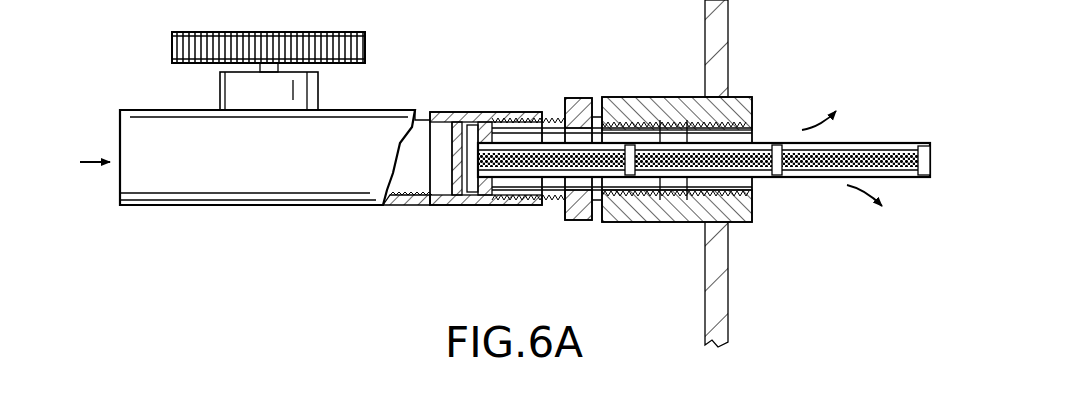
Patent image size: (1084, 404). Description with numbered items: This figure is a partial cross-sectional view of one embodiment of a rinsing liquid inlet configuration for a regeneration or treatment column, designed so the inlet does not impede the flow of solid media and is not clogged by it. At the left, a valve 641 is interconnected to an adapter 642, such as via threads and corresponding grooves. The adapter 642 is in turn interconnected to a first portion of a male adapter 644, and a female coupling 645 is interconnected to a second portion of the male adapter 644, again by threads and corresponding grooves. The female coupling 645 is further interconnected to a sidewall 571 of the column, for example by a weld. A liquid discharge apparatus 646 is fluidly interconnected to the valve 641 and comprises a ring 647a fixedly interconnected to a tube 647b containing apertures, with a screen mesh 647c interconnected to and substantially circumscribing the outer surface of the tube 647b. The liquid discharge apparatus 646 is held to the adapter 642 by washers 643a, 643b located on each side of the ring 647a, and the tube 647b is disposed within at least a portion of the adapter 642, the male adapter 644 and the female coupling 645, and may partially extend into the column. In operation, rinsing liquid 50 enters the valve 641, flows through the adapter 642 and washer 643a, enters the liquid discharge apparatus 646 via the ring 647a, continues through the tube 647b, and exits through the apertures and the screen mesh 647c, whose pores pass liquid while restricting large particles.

The rinsing liquid 50 is at (474, 160).
The sidewall 571 is at (722, 25).
The valve 641 is at (217, 177).
The adapter 642 is at (438, 123).
The washer 643a is at (458, 190).
The washer 643b is at (490, 193).
The male adapter 644 is at (573, 107).
The female coupling 645 is at (670, 213).
The liquid discharge apparatus 646 is at (927, 160).
The ring 647a is at (468, 130).
The tube 647b is at (798, 177).
The screen mesh 647c is at (863, 160).